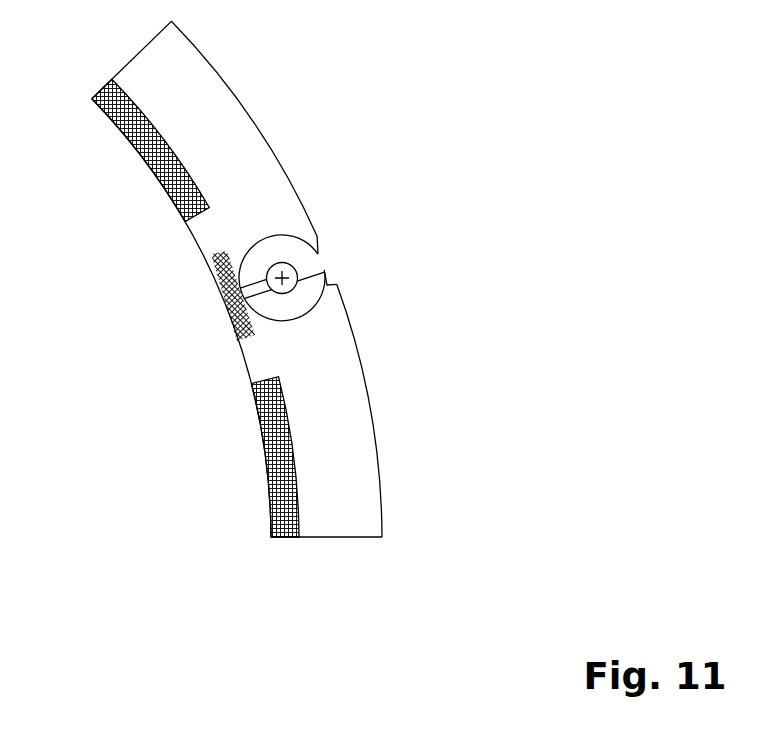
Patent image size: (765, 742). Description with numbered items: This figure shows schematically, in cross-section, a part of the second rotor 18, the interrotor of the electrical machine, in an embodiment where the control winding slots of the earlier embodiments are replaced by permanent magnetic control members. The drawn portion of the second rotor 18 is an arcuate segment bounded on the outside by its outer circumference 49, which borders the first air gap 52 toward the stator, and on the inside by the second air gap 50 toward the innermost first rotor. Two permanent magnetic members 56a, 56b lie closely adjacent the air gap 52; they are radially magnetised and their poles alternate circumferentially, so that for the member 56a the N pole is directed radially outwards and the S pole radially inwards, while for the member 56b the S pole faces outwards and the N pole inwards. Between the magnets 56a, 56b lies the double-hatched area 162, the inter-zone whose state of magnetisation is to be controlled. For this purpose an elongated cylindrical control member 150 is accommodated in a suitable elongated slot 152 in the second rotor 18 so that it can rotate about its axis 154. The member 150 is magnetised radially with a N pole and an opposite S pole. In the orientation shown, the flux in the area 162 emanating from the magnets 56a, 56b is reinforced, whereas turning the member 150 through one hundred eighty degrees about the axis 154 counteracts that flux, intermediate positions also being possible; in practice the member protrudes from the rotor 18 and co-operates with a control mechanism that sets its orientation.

The outer circumference 49 is at (262, 132).
The permanent magnetic member 56a is at (115, 110).
The permanent magnetic member 56b is at (286, 515).
The area between the permanent magnets 162 is at (232, 300).
The elongated cylindrical control member 150 is at (288, 242).
The axis 154 is at (295, 270).
The elongated slot 152 is at (338, 287).
The second air gap 50 is at (268, 533).
The first air gap 52 is at (383, 537).
The second rotor 18 is at (336, 510).